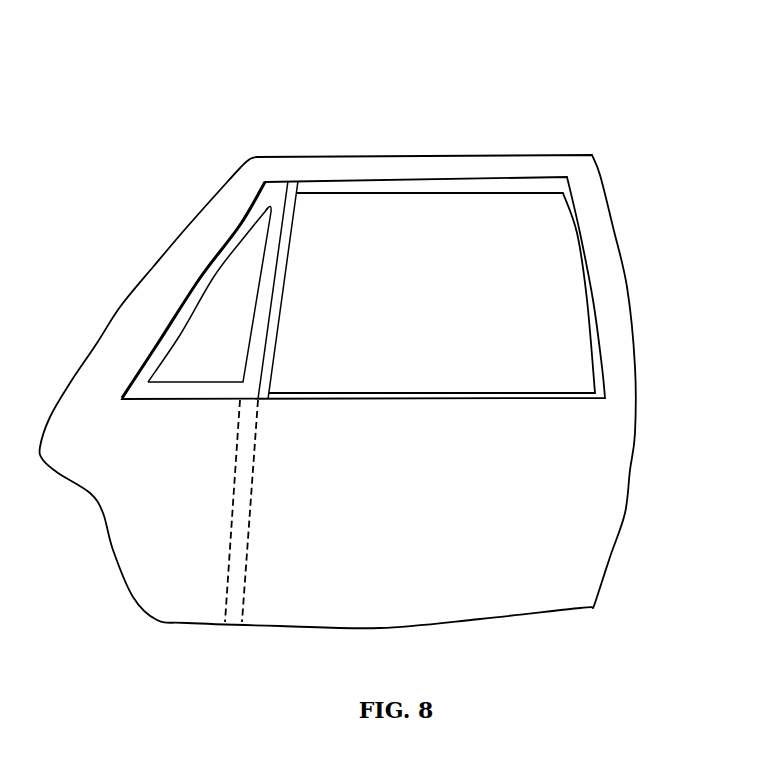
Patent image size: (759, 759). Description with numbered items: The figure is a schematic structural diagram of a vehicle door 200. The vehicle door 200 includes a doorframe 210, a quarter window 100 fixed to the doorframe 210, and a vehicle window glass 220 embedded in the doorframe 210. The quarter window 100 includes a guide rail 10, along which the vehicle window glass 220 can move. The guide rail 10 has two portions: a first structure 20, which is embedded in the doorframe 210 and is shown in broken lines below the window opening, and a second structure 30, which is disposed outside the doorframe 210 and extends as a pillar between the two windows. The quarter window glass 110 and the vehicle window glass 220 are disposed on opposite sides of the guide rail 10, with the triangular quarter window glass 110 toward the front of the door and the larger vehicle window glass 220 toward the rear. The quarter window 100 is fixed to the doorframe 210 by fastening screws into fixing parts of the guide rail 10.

The vehicle door 200 is at (529, 86).
The doorframe 210 is at (280, 164).
The vehicle window glass 220 is at (562, 284).
The second structure 30 is at (289, 256).
The quarter window glass 110 is at (230, 323).
The quarter window 100 is at (188, 430).
The guide rail 10 is at (273, 523).
The first structure 20 is at (253, 448).